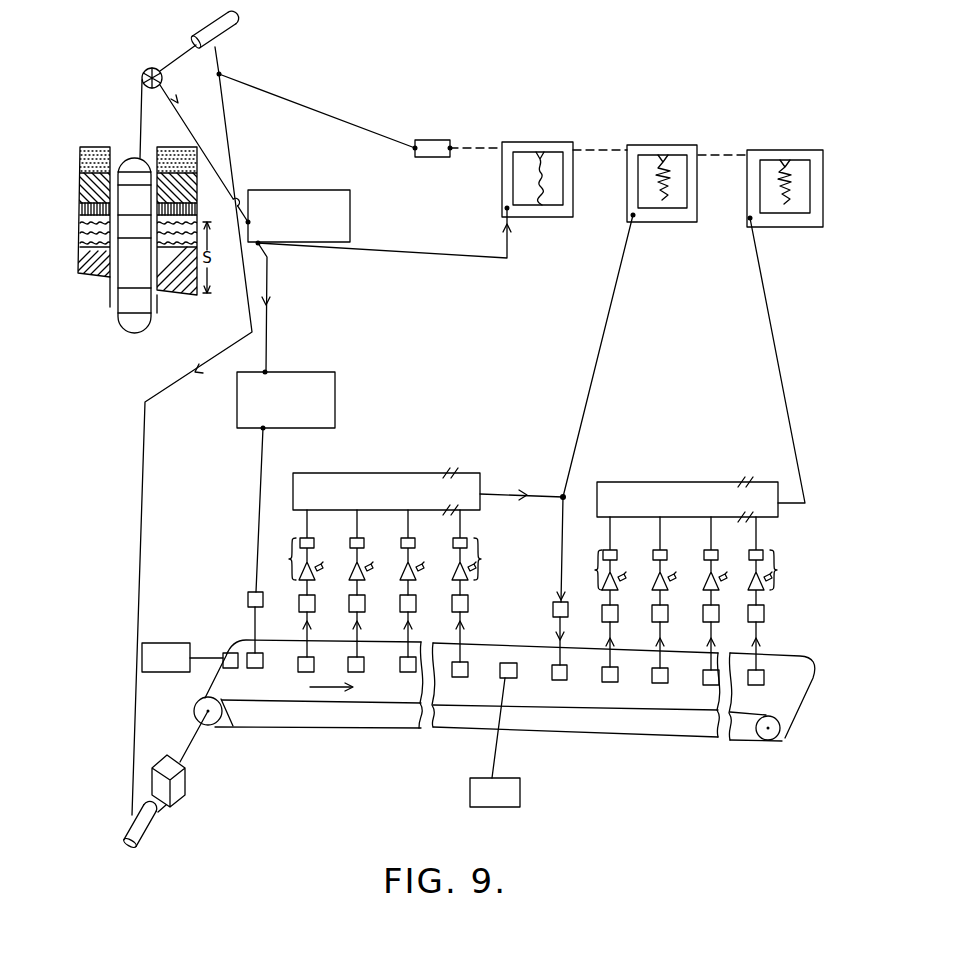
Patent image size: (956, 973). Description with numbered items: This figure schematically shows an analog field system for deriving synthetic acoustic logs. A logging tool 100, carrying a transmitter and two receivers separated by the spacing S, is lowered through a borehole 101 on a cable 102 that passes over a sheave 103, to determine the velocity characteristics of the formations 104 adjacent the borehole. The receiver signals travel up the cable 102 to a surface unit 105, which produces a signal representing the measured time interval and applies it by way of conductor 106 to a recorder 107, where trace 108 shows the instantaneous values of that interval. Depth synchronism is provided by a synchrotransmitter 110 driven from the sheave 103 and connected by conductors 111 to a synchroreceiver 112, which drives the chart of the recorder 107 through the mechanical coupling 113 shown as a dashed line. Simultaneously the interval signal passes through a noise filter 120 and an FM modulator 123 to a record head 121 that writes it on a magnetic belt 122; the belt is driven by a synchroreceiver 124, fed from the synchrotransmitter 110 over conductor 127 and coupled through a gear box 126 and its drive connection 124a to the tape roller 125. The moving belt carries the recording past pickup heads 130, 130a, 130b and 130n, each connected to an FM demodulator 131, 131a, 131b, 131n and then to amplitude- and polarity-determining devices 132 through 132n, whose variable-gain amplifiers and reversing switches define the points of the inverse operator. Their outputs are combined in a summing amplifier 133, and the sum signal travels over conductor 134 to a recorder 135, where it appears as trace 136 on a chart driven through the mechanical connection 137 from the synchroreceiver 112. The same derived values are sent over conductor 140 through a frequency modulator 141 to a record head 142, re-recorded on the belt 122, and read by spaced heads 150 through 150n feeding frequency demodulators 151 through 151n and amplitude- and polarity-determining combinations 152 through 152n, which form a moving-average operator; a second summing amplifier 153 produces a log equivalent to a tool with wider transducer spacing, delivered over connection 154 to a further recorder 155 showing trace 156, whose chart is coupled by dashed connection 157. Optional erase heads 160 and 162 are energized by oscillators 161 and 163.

The logging tool 100 is at (143, 160).
The borehole 101 is at (151, 300).
The cable 102 is at (140, 117).
The sheave 103 is at (144, 71).
The formations 104 is at (80, 209).
The surface unit 105 is at (312, 190).
The conductor 106 is at (398, 255).
The recorder 107 is at (543, 142).
The trace 108 is at (548, 205).
The synchrotransmitter 110 is at (236, 23).
The conductors 111 is at (328, 114).
The synchroreceiver 112 is at (428, 140).
The mechanical coupling 113 is at (485, 144).
The noise filter 120 is at (337, 398).
The record head 121 is at (250, 654).
The magnetic belt 122 is at (268, 728).
The modulator 123 is at (248, 597).
The synchroreceiver 124 is at (148, 836).
The drive shaft 124a is at (174, 804).
The tape roller 125 is at (209, 716).
The gear box 126 is at (185, 790).
The conductor 127 is at (141, 548).
The pickup head 130 is at (299, 672).
The pickup head 130a is at (357, 672).
The pickup head 130b is at (408, 672).
The pickup head 130n is at (460, 677).
The FM demodulator 131 is at (299, 611).
The FM demodulator 131a is at (350, 611).
The FM demodulator 131b is at (401, 611).
The FM demodulator 131n is at (453, 611).
The amplitude- and polarity-determining device 132 is at (291, 552).
The amplitude- and polarity-determining device 132n is at (487, 552).
The summing amplifier 133 is at (383, 472).
The conductor 134 is at (599, 356).
The recorder 135 is at (657, 145).
The trace 136 is at (673, 192).
The mechanical connection 137 is at (592, 149).
The conductor 140 is at (566, 554).
The frequency modulator 141 is at (553, 608).
The record head 142 is at (552, 664).
The spaced head 150 is at (611, 682).
The spaced head 150n is at (756, 685).
The frequency demodulator 151 is at (603, 623).
The frequency demodulator 151n is at (765, 623).
The amplitude- and polarity-determining combination 152 is at (595, 561).
The amplitude- and polarity-determining combination 152n is at (786, 561).
The summing amplifier 153 is at (668, 482).
The output line 154 is at (777, 358).
The display 155 is at (778, 150).
The trace 156 is at (792, 202).
The connection 157 is at (713, 154).
The erase head 160 is at (226, 654).
The oscillator 161 is at (155, 643).
The erase head 162 is at (509, 679).
The oscillator 163 is at (521, 786).